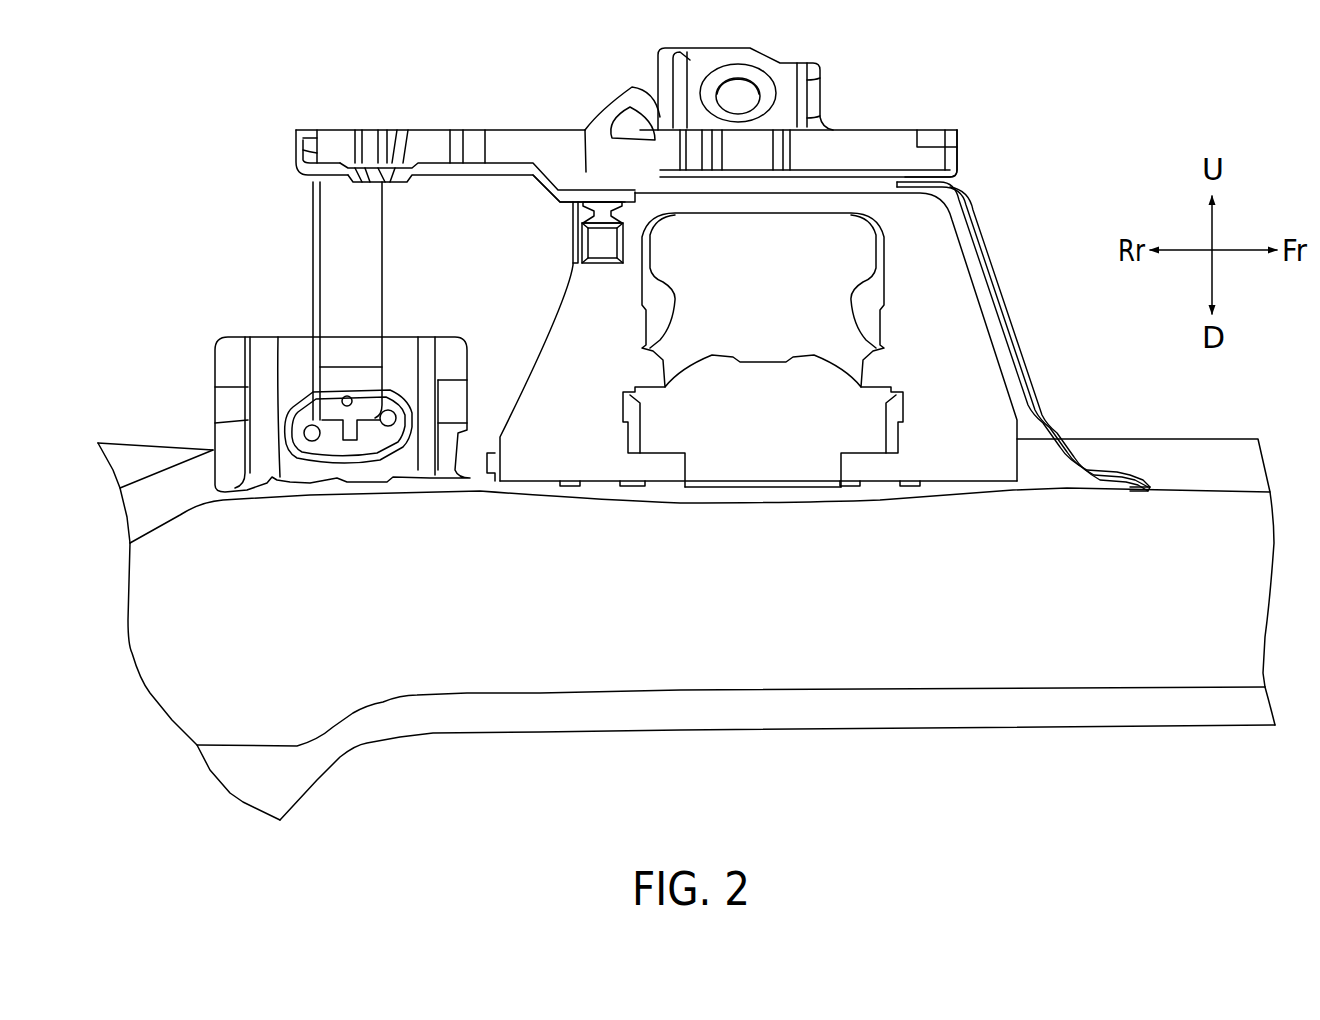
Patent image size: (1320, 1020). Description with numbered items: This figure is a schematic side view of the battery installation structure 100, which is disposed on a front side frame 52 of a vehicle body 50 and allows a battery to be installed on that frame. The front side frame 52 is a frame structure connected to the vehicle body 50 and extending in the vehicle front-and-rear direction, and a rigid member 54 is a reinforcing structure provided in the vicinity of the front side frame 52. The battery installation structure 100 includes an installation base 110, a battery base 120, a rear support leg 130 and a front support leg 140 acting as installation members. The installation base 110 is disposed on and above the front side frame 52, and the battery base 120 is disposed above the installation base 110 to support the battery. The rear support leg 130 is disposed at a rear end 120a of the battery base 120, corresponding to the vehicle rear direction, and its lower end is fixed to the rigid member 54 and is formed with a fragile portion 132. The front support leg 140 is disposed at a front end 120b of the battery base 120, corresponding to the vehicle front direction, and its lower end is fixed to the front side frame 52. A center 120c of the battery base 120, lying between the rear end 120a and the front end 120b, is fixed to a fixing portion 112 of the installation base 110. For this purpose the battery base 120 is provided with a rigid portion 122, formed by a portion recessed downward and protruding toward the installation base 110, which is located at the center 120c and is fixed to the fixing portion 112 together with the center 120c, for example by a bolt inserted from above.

The vehicle body 50 is at (205, 282).
The front side frame 52 is at (177, 480).
The rigid member 54 is at (228, 362).
The battery installation structure 100 is at (1022, 147).
The installation base 110 is at (910, 241).
The fixing portion 112 is at (598, 201).
The battery base 120 is at (935, 130).
The rear end 120a is at (288, 136).
The front end 120b is at (965, 136).
The center 120c is at (563, 171).
The rigid portion 122 is at (604, 222).
The rear support leg 130 is at (328, 240).
The fragile portion 132 is at (338, 400).
The front support leg 140 is at (980, 267).